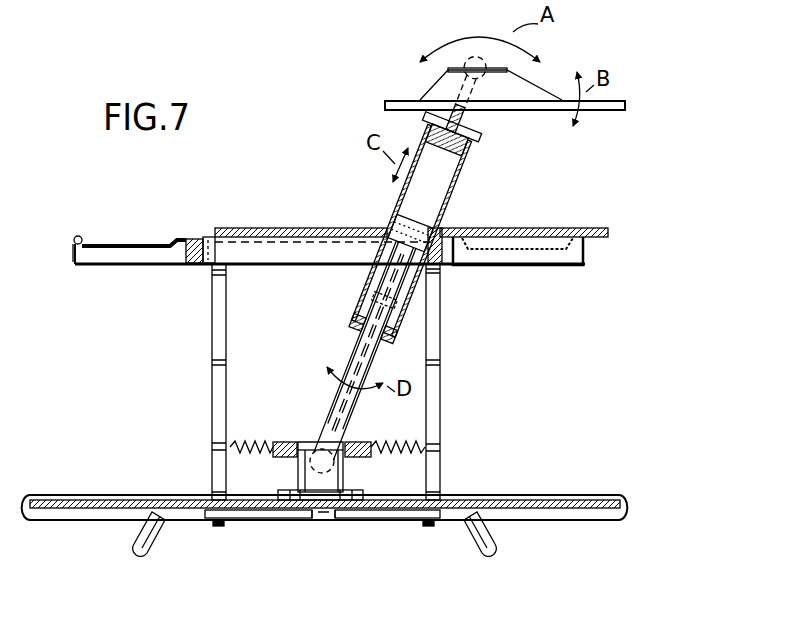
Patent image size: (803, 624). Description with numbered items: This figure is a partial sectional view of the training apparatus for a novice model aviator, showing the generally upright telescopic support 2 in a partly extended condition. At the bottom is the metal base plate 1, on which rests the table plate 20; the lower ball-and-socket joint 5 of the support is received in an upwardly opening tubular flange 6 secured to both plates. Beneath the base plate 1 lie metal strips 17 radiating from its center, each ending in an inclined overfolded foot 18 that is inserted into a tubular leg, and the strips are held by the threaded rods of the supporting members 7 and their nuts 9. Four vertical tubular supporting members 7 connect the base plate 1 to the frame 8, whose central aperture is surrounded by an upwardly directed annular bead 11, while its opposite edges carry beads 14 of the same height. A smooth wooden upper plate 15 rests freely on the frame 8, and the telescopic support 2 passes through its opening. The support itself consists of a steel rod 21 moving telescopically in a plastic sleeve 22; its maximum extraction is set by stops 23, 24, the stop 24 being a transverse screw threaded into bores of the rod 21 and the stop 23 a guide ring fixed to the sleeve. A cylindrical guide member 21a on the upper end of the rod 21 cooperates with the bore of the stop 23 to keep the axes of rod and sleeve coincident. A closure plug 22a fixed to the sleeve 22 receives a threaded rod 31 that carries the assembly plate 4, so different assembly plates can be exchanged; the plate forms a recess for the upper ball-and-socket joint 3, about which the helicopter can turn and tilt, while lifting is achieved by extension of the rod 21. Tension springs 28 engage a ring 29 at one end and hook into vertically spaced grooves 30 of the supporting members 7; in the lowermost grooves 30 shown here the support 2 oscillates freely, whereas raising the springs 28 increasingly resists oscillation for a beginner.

The base plate 1 is at (320, 512).
The telescopic support 2 is at (380, 200).
The ball-and-socket joint 3 is at (473, 58).
The assembly plate 4 is at (545, 92).
The ball-and-socket joint 5 is at (318, 455).
The flange 6 is at (343, 474).
The elongated supporting members 7 is at (212, 408).
The frame 8 is at (130, 250).
The nuts 9 is at (218, 526).
The annular bead 11 is at (188, 239).
The beads 14 is at (73, 243).
The upper plate 15 is at (258, 228).
The metal strips 17 is at (270, 518).
The overfolded foot 18 is at (150, 548).
The table plate 20 is at (588, 497).
The steel rod 21 is at (360, 356).
The cylindrical guide member 21a is at (393, 223).
The sleeve 22 is at (455, 184).
The closure plug 22a is at (485, 143).
The stop 23 is at (352, 323).
The stop 24 is at (366, 300).
The tension springs 28 is at (250, 445).
The ring 29 is at (358, 448).
The grooves 30 is at (212, 362).
The threaded rod 31 is at (467, 120).